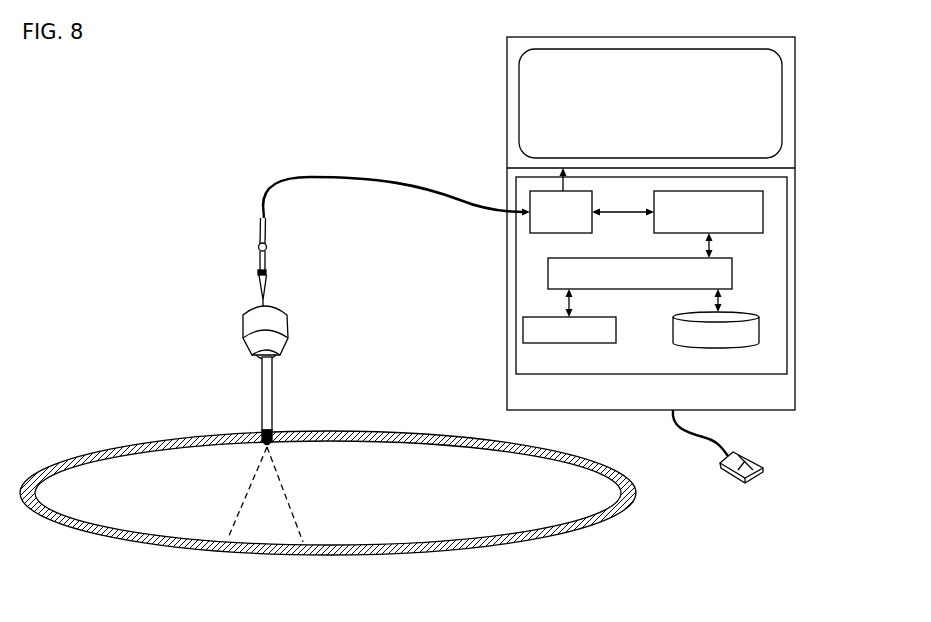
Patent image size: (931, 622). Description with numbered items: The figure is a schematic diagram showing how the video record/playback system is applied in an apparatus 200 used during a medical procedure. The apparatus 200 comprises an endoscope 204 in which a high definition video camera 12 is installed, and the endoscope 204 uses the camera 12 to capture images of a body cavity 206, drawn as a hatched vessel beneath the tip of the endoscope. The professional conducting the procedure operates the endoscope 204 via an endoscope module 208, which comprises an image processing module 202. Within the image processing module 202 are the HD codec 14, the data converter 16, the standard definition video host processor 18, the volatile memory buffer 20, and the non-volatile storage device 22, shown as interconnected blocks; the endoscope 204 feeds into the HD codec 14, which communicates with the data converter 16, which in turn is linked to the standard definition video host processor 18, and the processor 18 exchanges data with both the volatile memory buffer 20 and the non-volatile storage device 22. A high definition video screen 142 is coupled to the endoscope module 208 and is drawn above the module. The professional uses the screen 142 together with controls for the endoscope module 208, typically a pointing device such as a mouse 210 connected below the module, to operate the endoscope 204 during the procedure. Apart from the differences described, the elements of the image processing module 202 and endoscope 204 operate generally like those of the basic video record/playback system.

The apparatus 200 is at (406, 89).
The image processing module 202 is at (788, 333).
The high definition video screen 142 is at (507, 100).
The endoscope module 208 is at (507, 358).
The HD codec 14 is at (592, 202).
The data converter 16 is at (655, 225).
The standard definition video host processor 18 is at (635, 290).
The volatile memory buffer 20 is at (548, 317).
The non-volatile storage device 22 is at (747, 313).
The mouse 210 is at (762, 465).
The body cavity 206 is at (328, 493).
The endoscope 204 is at (272, 380).
The high definition video camera 12 is at (262, 436).